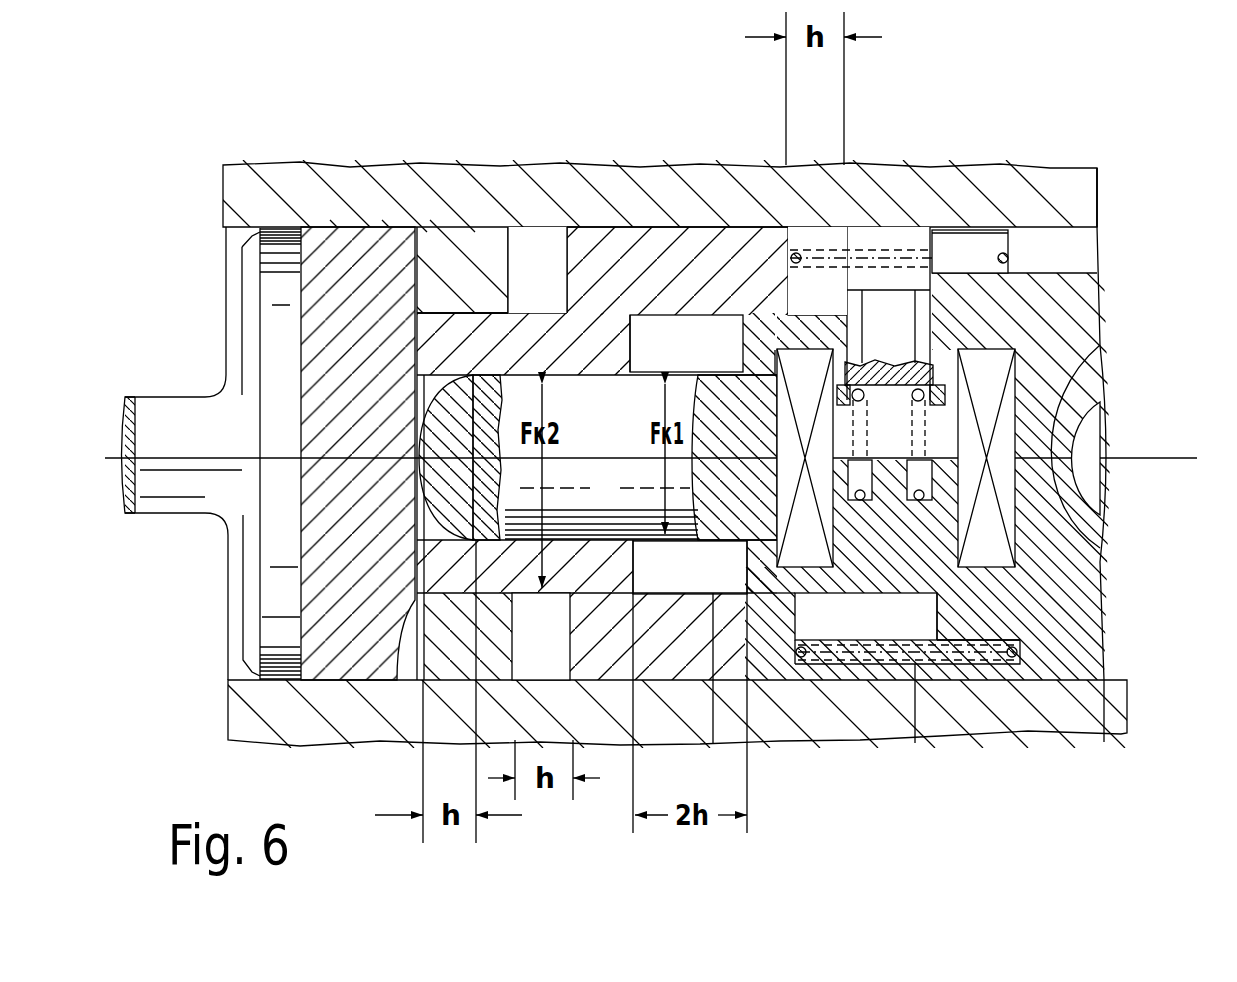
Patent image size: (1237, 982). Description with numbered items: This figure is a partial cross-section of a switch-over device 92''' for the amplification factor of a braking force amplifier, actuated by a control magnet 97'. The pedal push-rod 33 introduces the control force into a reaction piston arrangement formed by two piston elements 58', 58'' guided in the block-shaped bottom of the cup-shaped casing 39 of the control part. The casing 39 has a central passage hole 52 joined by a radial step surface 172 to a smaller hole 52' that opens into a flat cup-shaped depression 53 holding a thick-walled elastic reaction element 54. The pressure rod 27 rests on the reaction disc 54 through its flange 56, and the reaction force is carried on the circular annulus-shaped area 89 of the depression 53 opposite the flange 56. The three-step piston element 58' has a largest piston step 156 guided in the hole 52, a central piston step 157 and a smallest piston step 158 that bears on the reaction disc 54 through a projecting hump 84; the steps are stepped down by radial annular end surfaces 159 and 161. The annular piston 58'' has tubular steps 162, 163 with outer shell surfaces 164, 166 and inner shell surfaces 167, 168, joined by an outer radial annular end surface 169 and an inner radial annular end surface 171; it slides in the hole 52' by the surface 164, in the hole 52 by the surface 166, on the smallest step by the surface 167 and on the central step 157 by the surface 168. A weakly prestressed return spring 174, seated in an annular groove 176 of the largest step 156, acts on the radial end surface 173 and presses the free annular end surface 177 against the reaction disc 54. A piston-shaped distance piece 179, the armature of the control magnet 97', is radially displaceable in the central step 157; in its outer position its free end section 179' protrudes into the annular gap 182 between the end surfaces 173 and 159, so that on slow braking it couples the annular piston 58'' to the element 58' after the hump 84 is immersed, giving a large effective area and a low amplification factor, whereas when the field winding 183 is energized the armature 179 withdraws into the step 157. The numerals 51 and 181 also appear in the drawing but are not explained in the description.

The pressure rod 27 is at (168, 398).
The pedal push-rod 33 is at (1108, 425).
The casing 39 is at (1030, 182).
The axis 51 is at (1190, 458).
The central passage hole 52 is at (825, 692).
The hole 52' is at (456, 194).
The cup-shaped depression 53 is at (300, 300).
The elastic reaction element 54 is at (330, 265).
The flange 56 is at (282, 590).
The reaction piston element 58' is at (788, 462).
The second piston element 58'' is at (677, 179).
The hump 84 is at (440, 420).
The circular annulus-shaped area 89 is at (400, 742).
The switch-over device 92''' is at (1156, 142).
The control magnet 97' is at (918, 692).
The piston step 156 is at (1085, 682).
The second piston step 157 is at (850, 567).
The third piston step 158 is at (636, 498).
The radial annular end surface 159 is at (932, 666).
The radial annular end surface 161 is at (718, 682).
The cylindrical tubular step 162 is at (462, 325).
The larger-diameter annular piston step 163 is at (693, 305).
The outer shell surface 164 is at (548, 290).
The outer shell surface 166 is at (726, 282).
The inner shell surface 167 is at (598, 360).
The inner shell surface 168 is at (665, 322).
The outer radial annular end surface 169 is at (563, 300).
The inner radial annular end surface 171 is at (656, 300).
The radial step surface 172 is at (548, 645).
The radial end surface 173 is at (800, 246).
The return spring 174 is at (960, 262).
The radially outer annular groove 176 is at (958, 216).
The free annular end surface 177 is at (430, 302).
The distance piece 179 is at (890, 305).
The free end section 179' is at (888, 235).
The seal 181 is at (945, 398).
The annular gap 182 is at (812, 666).
The field winding 183 is at (1003, 540).